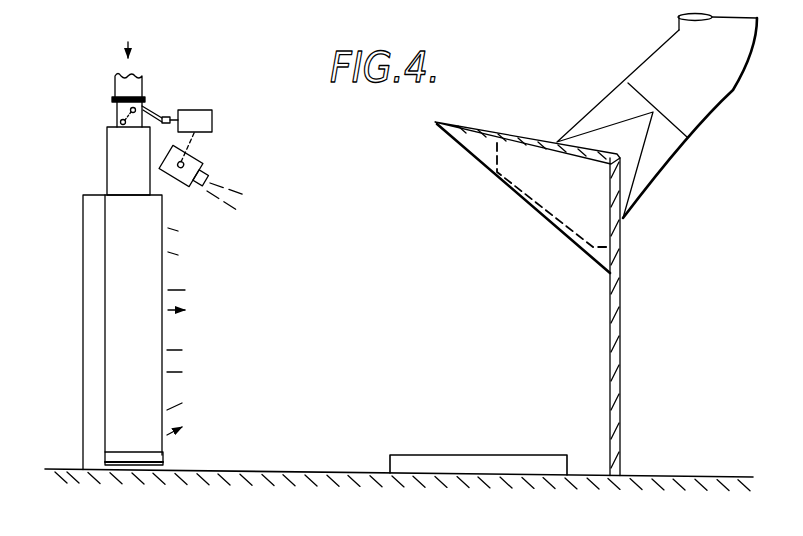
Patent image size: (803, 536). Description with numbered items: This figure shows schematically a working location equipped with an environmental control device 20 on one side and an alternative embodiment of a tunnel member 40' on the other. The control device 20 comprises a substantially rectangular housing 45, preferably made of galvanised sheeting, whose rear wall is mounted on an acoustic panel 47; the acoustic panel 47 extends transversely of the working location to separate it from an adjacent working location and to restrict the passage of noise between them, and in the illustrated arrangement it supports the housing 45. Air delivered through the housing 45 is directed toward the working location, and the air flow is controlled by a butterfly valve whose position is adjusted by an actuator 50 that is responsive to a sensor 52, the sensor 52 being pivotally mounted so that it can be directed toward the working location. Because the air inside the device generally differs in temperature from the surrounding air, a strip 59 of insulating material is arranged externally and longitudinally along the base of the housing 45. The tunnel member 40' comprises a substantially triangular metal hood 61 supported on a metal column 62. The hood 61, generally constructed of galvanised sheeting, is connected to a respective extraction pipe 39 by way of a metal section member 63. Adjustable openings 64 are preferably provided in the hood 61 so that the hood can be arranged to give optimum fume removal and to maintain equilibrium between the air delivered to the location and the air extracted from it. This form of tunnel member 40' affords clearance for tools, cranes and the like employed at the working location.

The environmental control device 20 is at (247, 370).
The extraction pipe 39 is at (679, 30).
The tunnel member 40' is at (562, 282).
The housing 45 is at (157, 243).
The acoustic panel 47 is at (88, 203).
The actuator 50 is at (212, 118).
The sensor 52 is at (196, 160).
The strip of insulating material 59 is at (153, 458).
The hood 61 is at (470, 153).
The column 62 is at (622, 425).
The metal section member 63 is at (603, 100).
The adjustable openings 64 is at (603, 262).